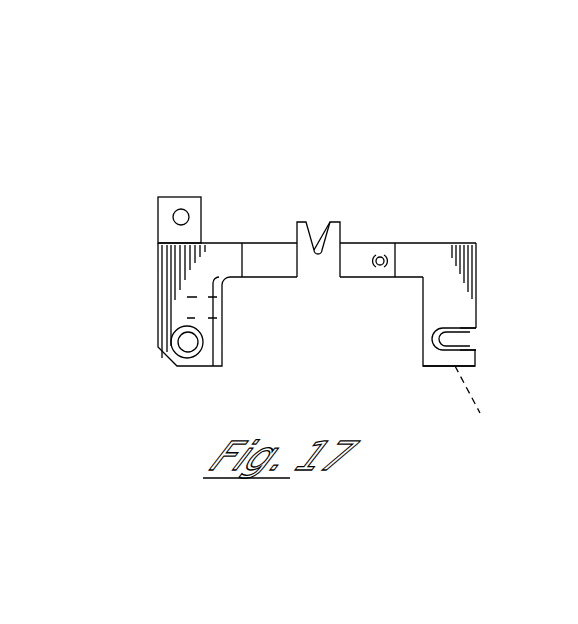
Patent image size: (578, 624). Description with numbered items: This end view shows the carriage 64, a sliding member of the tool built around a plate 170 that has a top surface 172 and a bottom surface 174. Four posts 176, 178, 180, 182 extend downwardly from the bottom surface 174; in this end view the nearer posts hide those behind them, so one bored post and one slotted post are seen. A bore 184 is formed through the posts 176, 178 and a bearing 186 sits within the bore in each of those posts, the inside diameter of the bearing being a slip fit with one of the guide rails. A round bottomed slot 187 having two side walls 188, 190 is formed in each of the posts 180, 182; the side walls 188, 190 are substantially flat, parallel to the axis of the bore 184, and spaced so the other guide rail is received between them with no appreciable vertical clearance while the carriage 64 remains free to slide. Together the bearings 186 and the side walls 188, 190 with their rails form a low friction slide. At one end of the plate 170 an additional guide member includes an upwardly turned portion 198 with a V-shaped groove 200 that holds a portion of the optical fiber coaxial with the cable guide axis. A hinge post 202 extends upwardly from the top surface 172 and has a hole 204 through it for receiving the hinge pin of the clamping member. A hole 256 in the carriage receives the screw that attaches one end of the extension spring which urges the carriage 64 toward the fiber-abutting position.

The carriage 64 is at (293, 131).
The plate 170 is at (435, 261).
The top surface 172 is at (404, 243).
The bottom surface 174 is at (407, 279).
The post 176 is at (203, 361).
The post 178 is at (222, 350).
The post 180 is at (430, 359).
The post 182 is at (479, 407).
The bore 184 is at (183, 345).
The bearing 186 is at (178, 327).
The round bottomed slot 187 is at (455, 342).
The side wall 188 is at (473, 333).
The side wall 190 is at (473, 351).
The upwardly turned portion 198 is at (341, 237).
The V-shaped groove 200 is at (305, 222).
The hinge post 202 is at (171, 197).
The hole 204 is at (187, 214).
The hole 256 is at (375, 262).